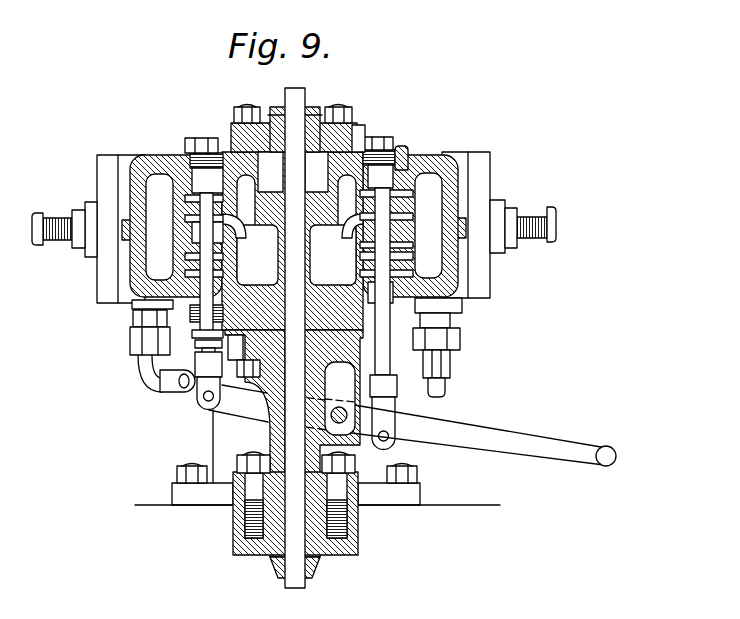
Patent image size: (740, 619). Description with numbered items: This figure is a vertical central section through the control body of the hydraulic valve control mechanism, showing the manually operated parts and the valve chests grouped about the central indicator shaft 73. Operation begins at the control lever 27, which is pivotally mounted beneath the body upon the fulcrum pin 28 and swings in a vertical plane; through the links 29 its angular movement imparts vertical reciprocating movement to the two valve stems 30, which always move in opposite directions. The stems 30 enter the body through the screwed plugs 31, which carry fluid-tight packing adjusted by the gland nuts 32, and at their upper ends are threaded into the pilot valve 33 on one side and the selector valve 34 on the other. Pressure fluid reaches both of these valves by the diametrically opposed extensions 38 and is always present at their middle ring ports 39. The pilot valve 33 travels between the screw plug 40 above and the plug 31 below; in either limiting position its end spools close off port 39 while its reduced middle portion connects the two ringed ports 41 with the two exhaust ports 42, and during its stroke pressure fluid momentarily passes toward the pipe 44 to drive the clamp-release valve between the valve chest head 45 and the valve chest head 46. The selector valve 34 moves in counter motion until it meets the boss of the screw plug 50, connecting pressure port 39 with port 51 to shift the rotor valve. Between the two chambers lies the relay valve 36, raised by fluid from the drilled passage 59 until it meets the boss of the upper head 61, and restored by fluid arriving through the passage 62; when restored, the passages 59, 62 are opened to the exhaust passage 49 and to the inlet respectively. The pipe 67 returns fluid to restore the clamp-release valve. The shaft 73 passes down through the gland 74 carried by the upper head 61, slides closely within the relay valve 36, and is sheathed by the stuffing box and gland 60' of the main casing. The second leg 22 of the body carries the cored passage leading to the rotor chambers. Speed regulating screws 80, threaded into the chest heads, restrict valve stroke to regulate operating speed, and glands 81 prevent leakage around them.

The shaft 73 is at (302, 96).
The gland 74 is at (310, 110).
The screw plug 40 is at (192, 143).
The exhaust passage 49 is at (160, 182).
The valve chest head 45 is at (100, 172).
The valve chest head 46 is at (486, 165).
The speed regulating screws 80 is at (42, 225).
The glands 81 is at (78, 244).
The pilot valve 33 is at (205, 190).
The exhaust ports 42 is at (186, 199).
The ringed ports 41 is at (186, 219).
The middle ring ports 39 is at (186, 256).
The upper head 61 is at (366, 130).
The screw plug 50 is at (403, 153).
The selector valve 34 is at (385, 199).
The port 51 is at (404, 271).
The relay valve 36 is at (270, 172).
The passage 62 is at (316, 172).
The extensions 38 is at (292, 230).
The screwed plugs 31 is at (192, 333).
The gland nuts 32 is at (197, 343).
The valve stems 30 is at (398, 384).
The pipe 44 is at (176, 390).
The links 29 is at (204, 402).
The drilled passage 59 is at (253, 368).
The second leg 22 is at (213, 443).
The gland 60' is at (297, 485).
The fulcrum pin 28 is at (339, 407).
The pipe 67 is at (446, 389).
The control lever 27 is at (530, 432).